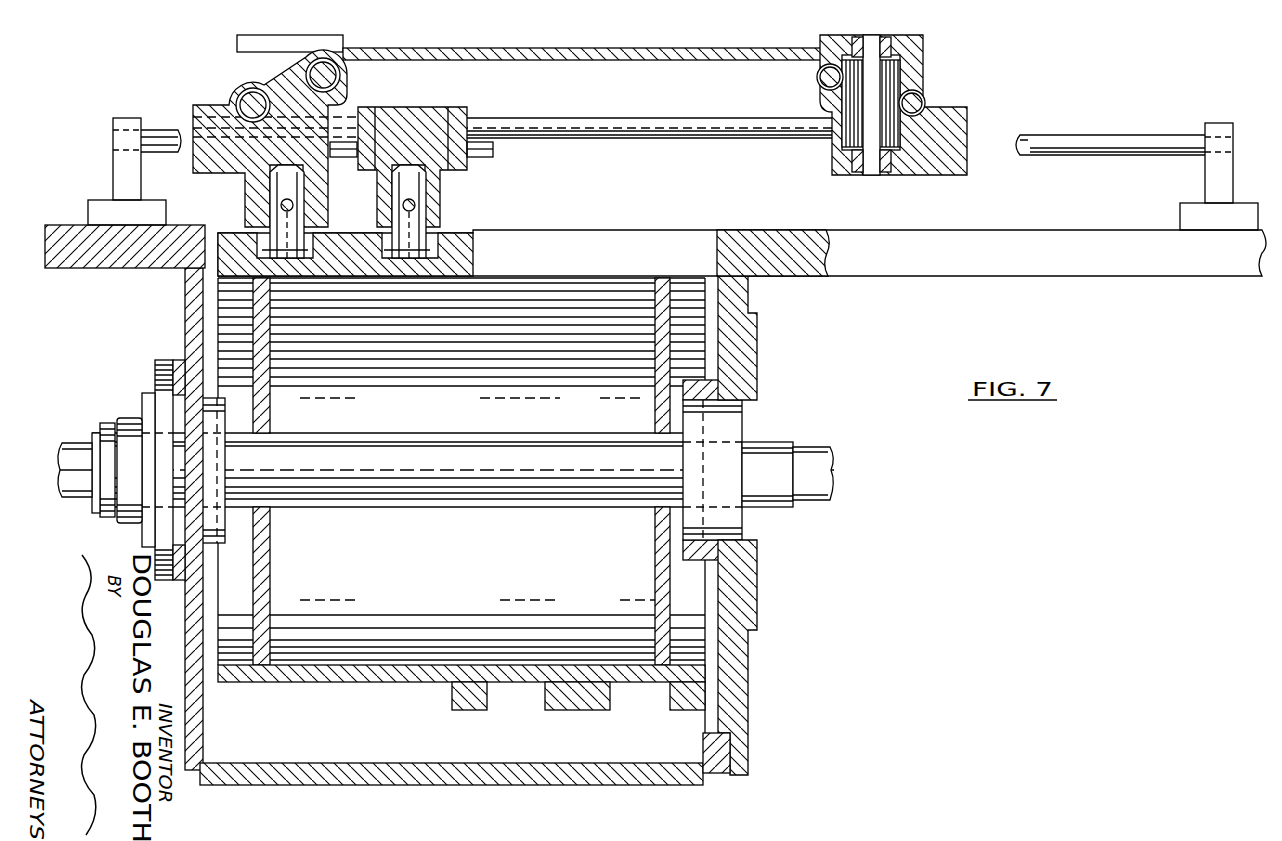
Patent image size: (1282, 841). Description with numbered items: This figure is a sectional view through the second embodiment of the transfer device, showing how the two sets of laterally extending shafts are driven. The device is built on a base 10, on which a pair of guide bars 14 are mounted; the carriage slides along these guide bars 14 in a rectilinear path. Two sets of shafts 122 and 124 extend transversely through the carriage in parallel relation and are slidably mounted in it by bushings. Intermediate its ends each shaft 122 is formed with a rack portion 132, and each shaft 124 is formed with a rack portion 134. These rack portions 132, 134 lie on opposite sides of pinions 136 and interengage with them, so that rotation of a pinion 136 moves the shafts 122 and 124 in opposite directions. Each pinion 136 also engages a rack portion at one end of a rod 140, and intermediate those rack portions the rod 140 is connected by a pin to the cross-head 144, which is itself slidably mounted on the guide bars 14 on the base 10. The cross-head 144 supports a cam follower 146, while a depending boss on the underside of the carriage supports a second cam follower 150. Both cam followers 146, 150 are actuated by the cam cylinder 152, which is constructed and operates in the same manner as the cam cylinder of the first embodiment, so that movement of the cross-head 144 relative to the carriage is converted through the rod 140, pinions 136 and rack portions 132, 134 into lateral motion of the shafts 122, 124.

The base 10 is at (812, 238).
The guide bars 14 is at (1140, 139).
The shafts 122 is at (251, 103).
The shafts 124 is at (350, 77).
The rack portion 132 is at (918, 100).
The rack portion 134 is at (822, 79).
The pinions 136 is at (890, 82).
The rod 140 is at (697, 130).
The cross-head 144 is at (435, 110).
The cam follower 146 is at (437, 226).
The cam follower 150 is at (308, 238).
The cam cylinder 152 is at (408, 686).